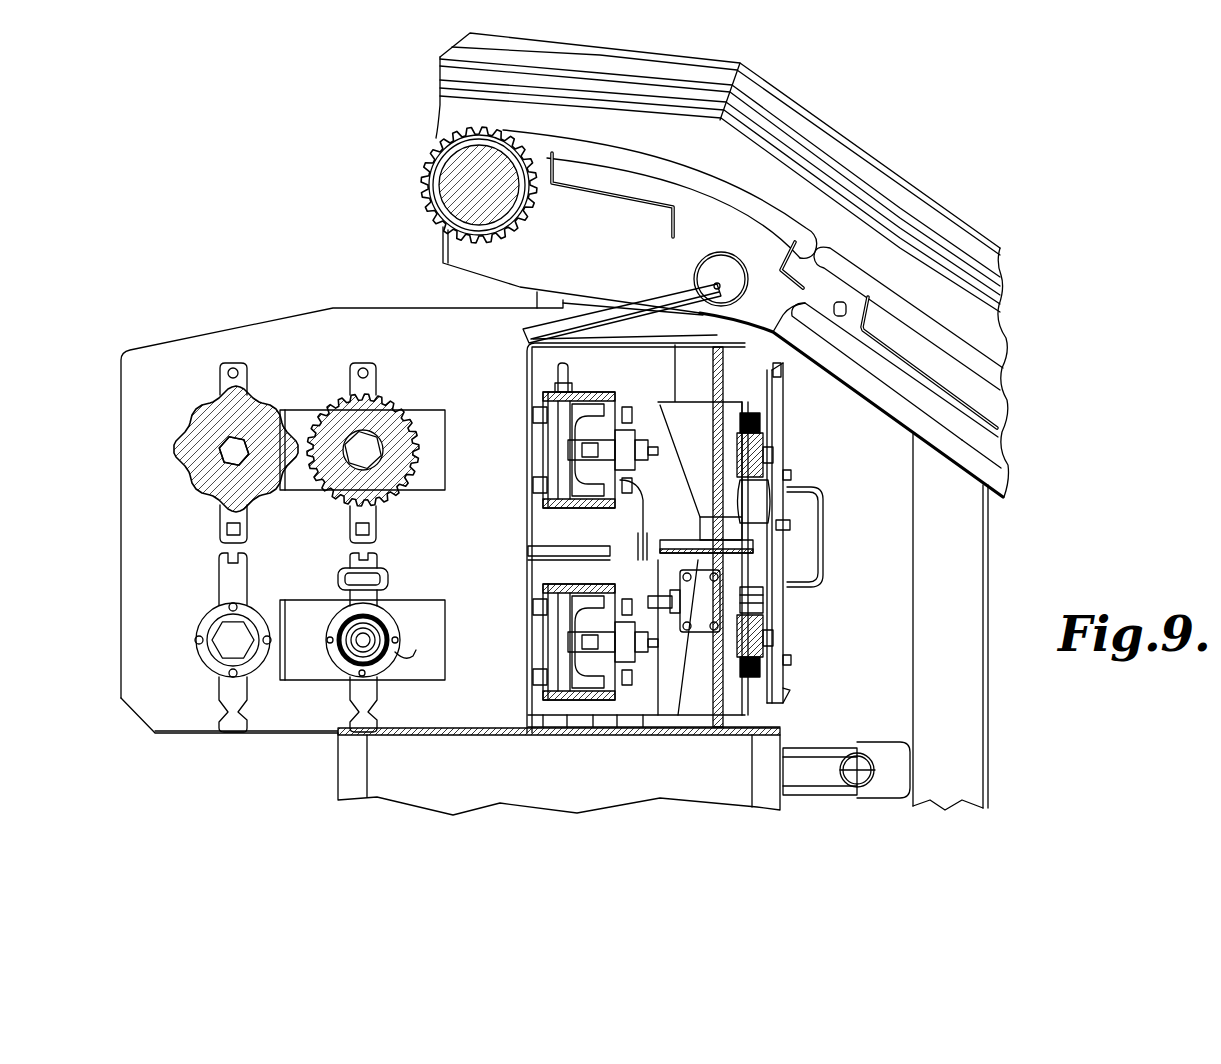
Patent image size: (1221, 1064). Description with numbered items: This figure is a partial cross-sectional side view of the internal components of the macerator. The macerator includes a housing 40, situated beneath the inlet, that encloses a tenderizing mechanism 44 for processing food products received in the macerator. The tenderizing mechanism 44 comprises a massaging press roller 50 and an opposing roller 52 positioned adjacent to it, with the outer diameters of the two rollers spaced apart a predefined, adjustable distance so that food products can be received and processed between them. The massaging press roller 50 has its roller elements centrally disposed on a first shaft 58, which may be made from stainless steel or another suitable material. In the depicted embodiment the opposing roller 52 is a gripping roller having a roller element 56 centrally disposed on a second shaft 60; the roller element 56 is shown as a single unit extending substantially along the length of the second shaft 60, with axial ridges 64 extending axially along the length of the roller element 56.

The housing 40 is at (984, 541).
The tenderizing mechanism 44 is at (143, 465).
The massaging press roller 50 is at (184, 394).
The opposing roller 52 is at (402, 397).
The roller element 56 is at (403, 444).
The first shaft 58 is at (226, 452).
The second shaft 60 is at (357, 449).
The axial ridges 64 is at (416, 457).